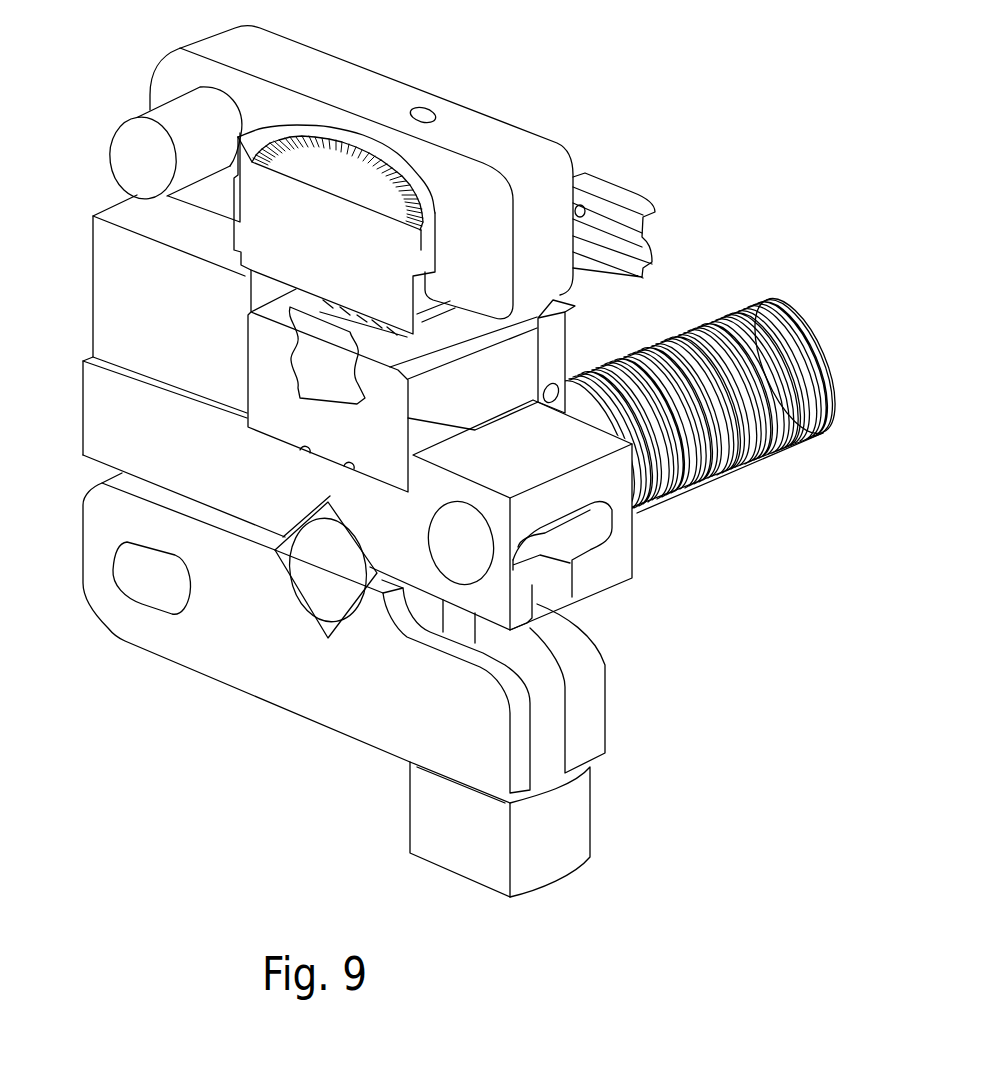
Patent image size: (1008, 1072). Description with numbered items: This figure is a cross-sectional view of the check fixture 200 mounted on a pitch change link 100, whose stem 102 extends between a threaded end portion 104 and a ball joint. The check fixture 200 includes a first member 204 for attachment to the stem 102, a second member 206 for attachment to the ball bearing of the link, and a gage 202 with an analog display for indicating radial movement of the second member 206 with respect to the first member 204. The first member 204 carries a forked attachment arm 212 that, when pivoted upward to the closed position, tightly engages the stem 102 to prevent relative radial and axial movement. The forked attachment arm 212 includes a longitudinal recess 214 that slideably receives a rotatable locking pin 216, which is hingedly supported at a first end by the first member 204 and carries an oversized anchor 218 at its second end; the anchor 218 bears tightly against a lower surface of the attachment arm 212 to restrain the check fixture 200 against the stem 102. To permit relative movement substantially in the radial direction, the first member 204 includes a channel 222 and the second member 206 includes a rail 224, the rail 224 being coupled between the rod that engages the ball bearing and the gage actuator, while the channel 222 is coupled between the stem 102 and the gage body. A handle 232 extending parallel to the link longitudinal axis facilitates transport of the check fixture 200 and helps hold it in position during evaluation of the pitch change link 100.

The pitch change link 100 is at (830, 368).
The stem 102 is at (327, 587).
The threaded end portion 104 is at (778, 452).
The check fixture 200 is at (518, 90).
The gage 202 is at (342, 276).
The first member 204 is at (557, 367).
The second member 206 is at (637, 220).
The forked attachment arm 212 is at (333, 690).
The longitudinal recess 214 is at (565, 733).
The locking pin 216 is at (500, 638).
The anchor 218 is at (567, 845).
The channel 222 is at (341, 437).
The rail 224 is at (341, 380).
The handle 232 is at (140, 147).